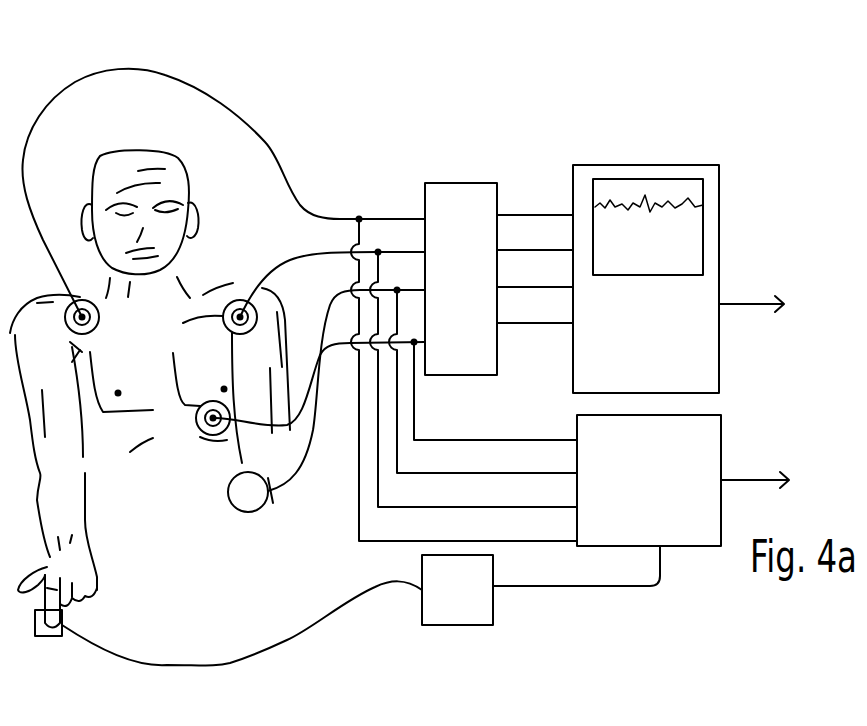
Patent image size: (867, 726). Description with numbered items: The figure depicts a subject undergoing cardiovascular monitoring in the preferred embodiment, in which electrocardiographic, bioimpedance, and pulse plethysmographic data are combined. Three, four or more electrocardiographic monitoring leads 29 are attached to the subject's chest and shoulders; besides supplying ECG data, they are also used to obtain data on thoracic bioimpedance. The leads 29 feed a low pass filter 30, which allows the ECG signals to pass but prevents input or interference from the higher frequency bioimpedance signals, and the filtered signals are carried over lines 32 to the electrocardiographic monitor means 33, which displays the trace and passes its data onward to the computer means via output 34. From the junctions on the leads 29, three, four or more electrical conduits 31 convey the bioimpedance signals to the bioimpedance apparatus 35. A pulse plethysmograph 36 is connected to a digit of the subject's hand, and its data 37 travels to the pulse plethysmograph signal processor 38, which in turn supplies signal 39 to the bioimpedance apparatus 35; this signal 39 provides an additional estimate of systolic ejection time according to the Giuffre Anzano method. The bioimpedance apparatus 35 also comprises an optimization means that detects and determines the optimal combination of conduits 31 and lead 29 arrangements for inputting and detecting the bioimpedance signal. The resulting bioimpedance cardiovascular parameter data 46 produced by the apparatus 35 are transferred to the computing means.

The electrocardiographic monitoring leads 29 is at (148, 58).
The low pass filter 30 is at (461, 279).
The electrical conduits 31 is at (487, 438).
The amplified ECG output lines 32 is at (553, 213).
The electrocardiographic monitor means 33 is at (646, 279).
The output to computer means 34 is at (740, 303).
The bioimpedance apparatus 35 is at (649, 480).
The pulse plethysmograph 36 is at (57, 638).
The pulse plethysmograph data 37 is at (287, 640).
The pulse plethysmograph signal processor 38 is at (457, 590).
The signal 39 is at (576, 566).
The bioimpedance cardiovascular parameter data 46 is at (771, 482).